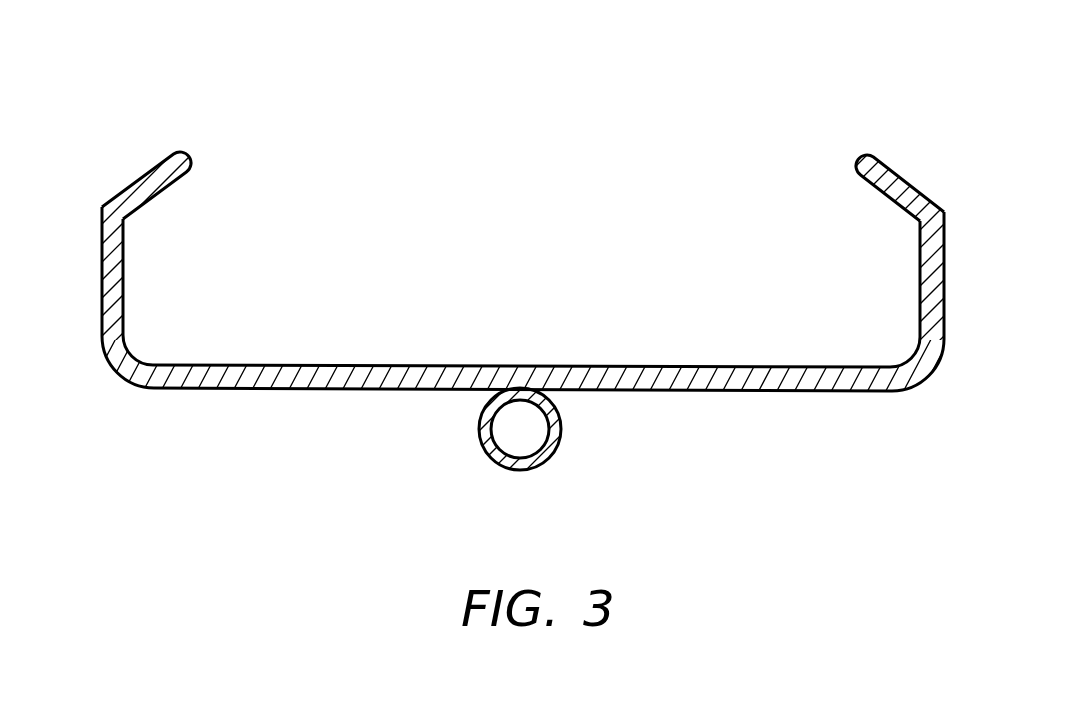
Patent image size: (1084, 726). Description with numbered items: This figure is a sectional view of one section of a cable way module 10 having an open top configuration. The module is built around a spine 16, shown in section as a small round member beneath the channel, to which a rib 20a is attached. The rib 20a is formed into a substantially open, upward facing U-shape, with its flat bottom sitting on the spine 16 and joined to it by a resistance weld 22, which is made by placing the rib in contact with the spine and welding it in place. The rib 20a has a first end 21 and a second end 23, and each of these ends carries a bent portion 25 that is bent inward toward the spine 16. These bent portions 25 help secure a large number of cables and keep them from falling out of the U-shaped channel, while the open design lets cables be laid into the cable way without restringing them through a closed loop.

The cable way module 10 is at (255, 438).
The spine 16 is at (532, 469).
The rib 20a is at (322, 365).
The first end 21 is at (179, 151).
The resistance weld 22 is at (518, 365).
The second end 23 is at (863, 155).
The bent portion 25 is at (125, 222).